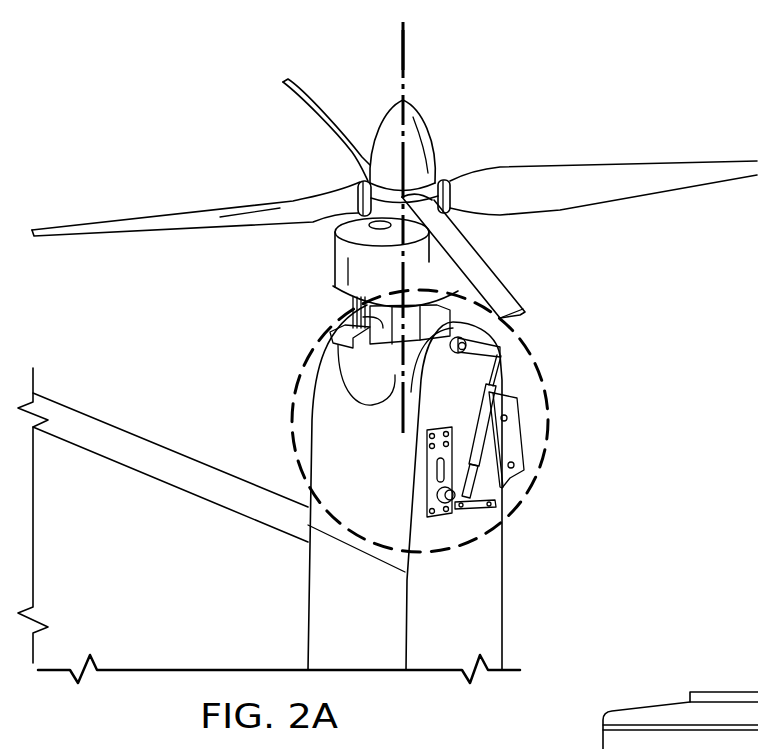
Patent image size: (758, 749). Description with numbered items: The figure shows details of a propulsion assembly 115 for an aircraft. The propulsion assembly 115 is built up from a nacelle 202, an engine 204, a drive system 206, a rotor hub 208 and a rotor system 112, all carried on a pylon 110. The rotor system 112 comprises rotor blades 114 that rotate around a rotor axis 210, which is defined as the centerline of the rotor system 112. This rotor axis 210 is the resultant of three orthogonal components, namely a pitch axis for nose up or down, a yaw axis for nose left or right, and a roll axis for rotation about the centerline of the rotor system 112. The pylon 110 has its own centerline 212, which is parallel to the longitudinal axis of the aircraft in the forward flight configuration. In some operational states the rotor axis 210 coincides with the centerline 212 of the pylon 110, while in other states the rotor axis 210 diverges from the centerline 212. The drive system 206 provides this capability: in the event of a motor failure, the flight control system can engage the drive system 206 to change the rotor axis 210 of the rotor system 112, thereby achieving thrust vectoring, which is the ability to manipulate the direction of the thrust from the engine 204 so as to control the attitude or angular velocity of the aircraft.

The pylon 110 is at (494, 594).
The rotor system 112 is at (512, 237).
The rotor blades 114 is at (636, 166).
The propulsion assembly 115 is at (232, 133).
The nacelle 202 is at (307, 551).
The engine 204 is at (334, 258).
The drive system 206 is at (553, 424).
The rotor hub 208 is at (433, 144).
The rotor axis 210 is at (407, 86).
The centerline of pylon 212 is at (402, 40).